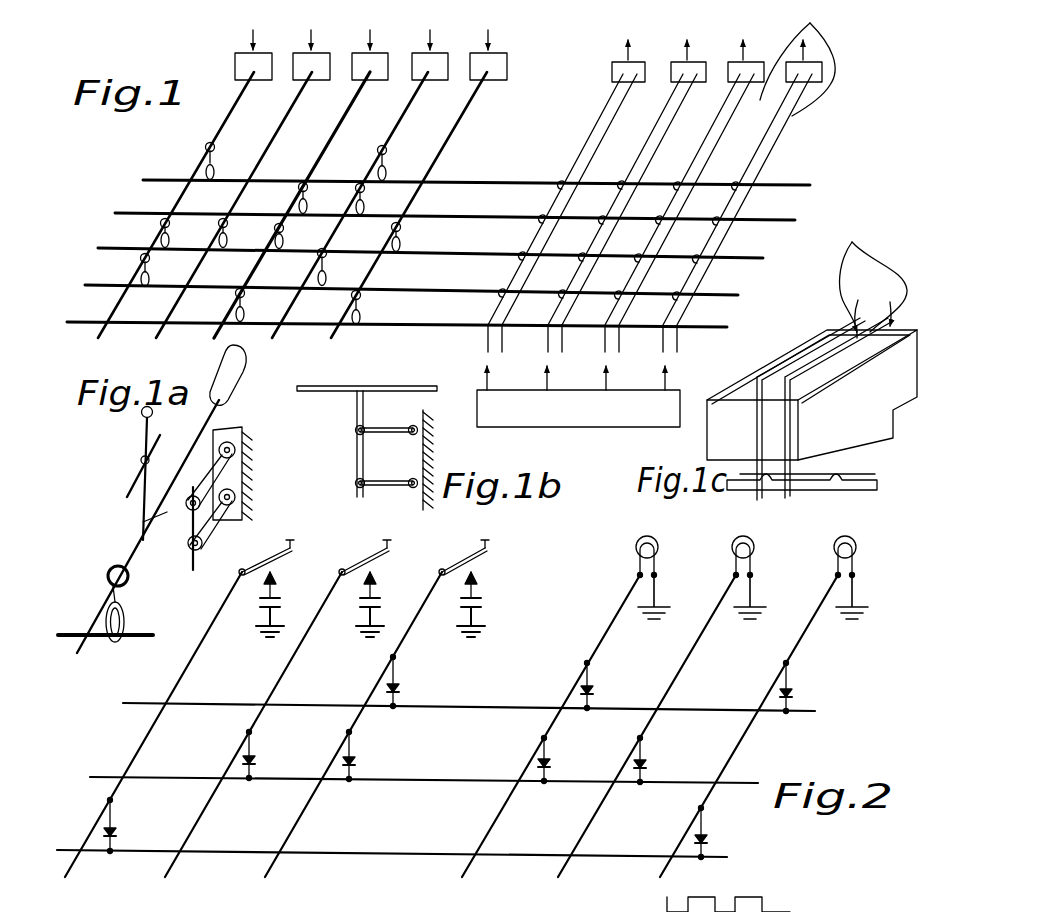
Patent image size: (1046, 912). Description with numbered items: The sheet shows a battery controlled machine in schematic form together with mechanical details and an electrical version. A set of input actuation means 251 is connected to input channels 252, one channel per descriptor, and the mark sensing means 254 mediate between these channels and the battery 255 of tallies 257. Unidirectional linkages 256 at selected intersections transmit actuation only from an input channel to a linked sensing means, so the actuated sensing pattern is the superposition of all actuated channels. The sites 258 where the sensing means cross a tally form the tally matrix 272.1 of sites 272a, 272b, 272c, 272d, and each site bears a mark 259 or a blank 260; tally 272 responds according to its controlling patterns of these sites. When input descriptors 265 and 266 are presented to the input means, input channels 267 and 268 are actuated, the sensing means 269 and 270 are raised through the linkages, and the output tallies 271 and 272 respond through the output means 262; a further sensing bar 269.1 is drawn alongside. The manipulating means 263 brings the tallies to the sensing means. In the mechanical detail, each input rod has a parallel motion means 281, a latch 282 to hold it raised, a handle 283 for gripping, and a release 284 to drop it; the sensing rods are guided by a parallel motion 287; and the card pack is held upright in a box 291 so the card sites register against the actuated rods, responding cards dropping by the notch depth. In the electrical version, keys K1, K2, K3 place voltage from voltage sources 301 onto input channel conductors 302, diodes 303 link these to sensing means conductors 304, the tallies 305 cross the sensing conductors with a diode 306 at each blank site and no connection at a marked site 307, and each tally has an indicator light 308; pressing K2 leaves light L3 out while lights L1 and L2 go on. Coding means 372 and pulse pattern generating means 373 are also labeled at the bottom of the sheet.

In FIG. 1, the input actuation means 251 is at (332, 56).
In FIG. 1, the input channels 252 is at (226, 118).
In FIG. 1A, the input channels 252 is at (108, 606).
In FIG. 1, the mark sensing means 254 is at (373, 326).
In FIG. 1A, the mark sensing means 254 is at (138, 643).
In FIG. 1B, the mark sensing means 254 is at (328, 391).
In FIG. 1C, the mark sensing means 254 is at (850, 480).
In FIG. 1, the battery 255 is at (733, 118).
In FIG. 1C, the battery 255 is at (863, 269).
In FIG. 1, the unidirectional linkages 256 is at (362, 207).
In FIG. 1A, the unidirectional linkages 256 is at (125, 608).
In FIG. 1, the tallies 257 is at (702, 185).
In FIG. 1, the sites 258 is at (750, 217).
In FIG. 1, the mark 259 is at (707, 296).
In FIG. 1, the blank 260 is at (673, 348).
In FIG. 1, the output means 262 is at (671, 62).
In FIG. 1, the manipulating means 263 is at (578, 396).
In FIG. 1, the input descriptor 265 is at (251, 46).
In FIG. 1, the input descriptor 266 is at (320, 46).
In FIG. 1, the input channel 267 is at (272, 131).
In FIG. 1, the input channel 268 is at (233, 200).
In FIG. 1, the sensing means 269 is at (765, 187).
In FIG. 1, the second code bar 269.1 is at (645, 170).
In FIG. 1, the sensing means 270 is at (468, 258).
In FIG. 1, the tally 271 is at (616, 126).
In FIG. 1, the tally 272 is at (673, 130).
In FIG. 1, the tally matrix 272.1 is at (490, 345).
In FIG. 1, the site 272a is at (633, 186).
In FIG. 1, the site 272b is at (570, 297).
In FIG. 1, the site 272c is at (590, 260).
In FIG. 1, the site 272d is at (612, 222).
In FIG. 1A, the parallel motion means 281 is at (214, 540).
In FIG. 1A, the latch 282 is at (140, 503).
In FIG. 1A, the handle 283 is at (247, 364).
In FIG. 1A, the release 284 is at (141, 415).
In FIG. 1B, the parallel motion 287 is at (395, 450).
In FIG. 1C, the box 291 is at (808, 338).
In FIG. 2, the voltage sources 301 is at (362, 602).
In FIG. 2, the input channel conductors 302 is at (281, 698).
In FIG. 2, the diodes 303 is at (362, 760).
In FIG. 2, the sensing means conductors 304 is at (418, 780).
In FIG. 2, the tallies 305 is at (700, 790).
In FIG. 2, the diode 306 is at (796, 692).
In FIG. 2, the marked site 307 is at (722, 783).
In FIG. 2, the indicator light 308 is at (742, 577).
In FIG. 2, the coding means 372 is at (760, 908).
In FIG. 2, the temporal pulse pattern generating means 373 is at (718, 908).
In FIG. 2, the key K1 is at (271, 547).
In FIG. 2, the key K2 is at (371, 547).
In FIG. 2, the key K3 is at (468, 547).
In FIG. 2, the light L1 is at (637, 548).
In FIG. 2, the light L2 is at (733, 550).
In FIG. 2, the light L3 is at (838, 541).